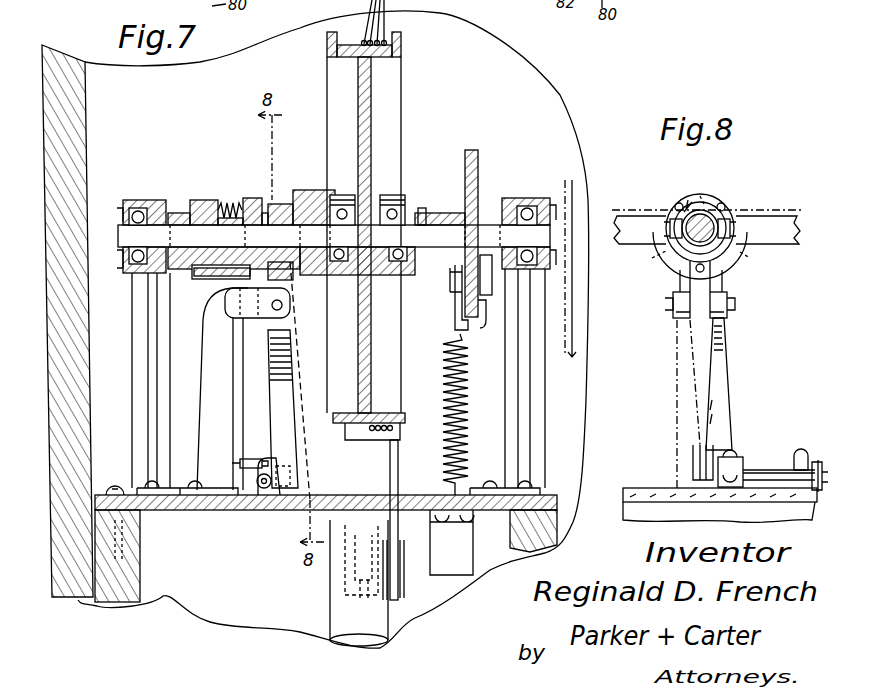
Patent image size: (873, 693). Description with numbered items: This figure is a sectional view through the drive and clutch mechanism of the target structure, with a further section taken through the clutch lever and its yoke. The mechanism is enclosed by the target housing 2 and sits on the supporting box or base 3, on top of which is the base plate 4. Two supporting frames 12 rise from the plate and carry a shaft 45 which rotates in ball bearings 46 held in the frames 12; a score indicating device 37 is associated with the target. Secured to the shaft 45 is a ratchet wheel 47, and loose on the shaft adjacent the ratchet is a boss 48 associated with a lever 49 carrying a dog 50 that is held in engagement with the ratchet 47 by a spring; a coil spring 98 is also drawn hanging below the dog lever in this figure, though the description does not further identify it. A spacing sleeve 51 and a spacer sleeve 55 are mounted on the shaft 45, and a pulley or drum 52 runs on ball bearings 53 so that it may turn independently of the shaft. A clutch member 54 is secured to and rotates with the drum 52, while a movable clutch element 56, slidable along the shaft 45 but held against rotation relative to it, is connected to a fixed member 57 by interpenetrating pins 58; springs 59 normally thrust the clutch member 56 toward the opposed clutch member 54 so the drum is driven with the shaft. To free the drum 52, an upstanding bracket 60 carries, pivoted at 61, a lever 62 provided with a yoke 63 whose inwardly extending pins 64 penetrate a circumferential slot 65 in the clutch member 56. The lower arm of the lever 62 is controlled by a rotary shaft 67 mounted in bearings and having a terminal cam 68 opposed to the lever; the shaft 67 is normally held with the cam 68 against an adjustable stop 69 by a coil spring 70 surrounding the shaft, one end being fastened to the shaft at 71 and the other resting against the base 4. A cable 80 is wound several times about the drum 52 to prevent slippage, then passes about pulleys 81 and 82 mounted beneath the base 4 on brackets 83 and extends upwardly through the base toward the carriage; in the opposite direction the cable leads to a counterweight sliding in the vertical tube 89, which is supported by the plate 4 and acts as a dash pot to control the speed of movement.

In FIG. 7, the target housing 2 is at (78, 585).
In FIG. 7, the supporting box or base 3 is at (140, 572).
In FIG. 8, the supporting box or base 3 is at (625, 515).
In FIG. 7, the base plate 4 is at (170, 512).
In FIG. 8, the base plate 4 is at (640, 488).
In FIG. 7, the supporting frames 12 is at (146, 200).
In FIG. 8, the supporting frames 12 is at (782, 216).
In FIG. 7, the score indicating device 37 is at (574, 313).
In FIG. 7, the shaft 45 is at (122, 236).
In FIG. 8, the shaft 45 is at (700, 228).
In FIG. 7, the ball bearings 46 is at (123, 262).
In FIG. 7, the ratchet wheel 47 is at (476, 152).
In FIG. 7, the boss 48 is at (448, 213).
In FIG. 7, the lever 49 is at (455, 306).
In FIG. 7, the dog 50 is at (487, 322).
In FIG. 7, the spacing sleeve 51 is at (414, 275).
In FIG. 7, the pulley or drum 52 is at (372, 86).
In FIG. 7, the ball bearings 53 is at (345, 195).
In FIG. 7, the clutch member 54 is at (318, 190).
In FIG. 7, the spacer sleeve 55 is at (300, 270).
In FIG. 7, the movable clutch element 56 is at (256, 198).
In FIG. 8, the movable clutch element 56 is at (714, 194).
In FIG. 7, the fixed member 57 is at (200, 200).
In FIG. 7, the interpenetrating pins 58 is at (216, 279).
In FIG. 8, the interpenetrating pins 58 is at (676, 204).
In FIG. 7, the springs 59 is at (236, 203).
In FIG. 8, the springs 59 is at (636, 296).
In FIG. 7, the upstanding bracket 60 is at (206, 347).
In FIG. 8, the upstanding bracket 60 is at (666, 383).
In FIG. 7, the pivot 61 is at (275, 312).
In FIG. 8, the pivot 61 is at (736, 300).
In FIG. 7, the lever 62 is at (276, 370).
In FIG. 8, the lever 62 is at (724, 345).
In FIG. 8, the yoke 63 is at (740, 264).
In FIG. 7, the inwardly extending pins 64 is at (282, 209).
In FIG. 8, the inwardly extending pins 64 is at (730, 220).
In FIG. 7, the circumferential slot 65 is at (268, 213).
In FIG. 8, the circumferential slot 65 is at (688, 204).
In FIG. 7, the rotary shaft 67 is at (263, 490).
In FIG. 8, the rotary shaft 67 is at (760, 466).
In FIG. 7, the cam 68 is at (278, 462).
In FIG. 8, the cam 68 is at (716, 445).
In FIG. 7, the adjustable stop 69 is at (253, 458).
In FIG. 8, the coil spring 70 is at (816, 462).
In FIG. 8, the fastening of spring to shaft 71 is at (800, 450).
In FIG. 7, the cable 80 is at (399, 462).
In FIG. 7, the pulley 81 is at (406, 595).
In FIG. 7, the pulley 82 is at (350, 600).
In FIG. 7, the brackets 83 is at (430, 541).
In FIG. 7, the vertical tube 89 is at (356, 638).
In FIG. 7, the spring 98 is at (448, 370).